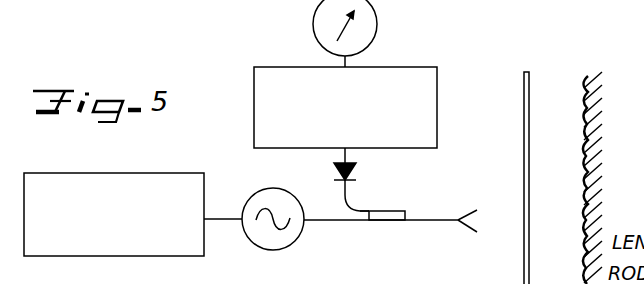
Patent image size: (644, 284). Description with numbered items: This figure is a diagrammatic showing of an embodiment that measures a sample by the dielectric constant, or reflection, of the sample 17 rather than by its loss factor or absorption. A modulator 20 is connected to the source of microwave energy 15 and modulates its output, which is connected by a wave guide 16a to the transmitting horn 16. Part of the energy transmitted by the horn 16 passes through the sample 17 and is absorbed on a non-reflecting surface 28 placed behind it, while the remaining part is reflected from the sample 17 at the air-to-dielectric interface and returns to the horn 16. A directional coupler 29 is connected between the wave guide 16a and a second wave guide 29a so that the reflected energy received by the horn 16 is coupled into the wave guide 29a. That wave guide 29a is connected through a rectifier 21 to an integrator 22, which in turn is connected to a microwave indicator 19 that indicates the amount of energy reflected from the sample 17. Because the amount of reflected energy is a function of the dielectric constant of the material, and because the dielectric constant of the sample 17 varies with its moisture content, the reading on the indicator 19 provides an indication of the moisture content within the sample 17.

The source of microwave energy 15 is at (283, 172).
The transmitting horn 16 is at (466, 228).
The wave guide 16a is at (400, 222).
The sample 17 is at (524, 88).
The microwave indicator 19 is at (378, 33).
The modulator 20 is at (113, 173).
The rectifier 21 is at (357, 170).
The integrator 22 is at (279, 67).
The non-reflecting surface 28 is at (589, 76).
The directional coupler 29 is at (400, 211).
The wave guide 29a is at (358, 207).